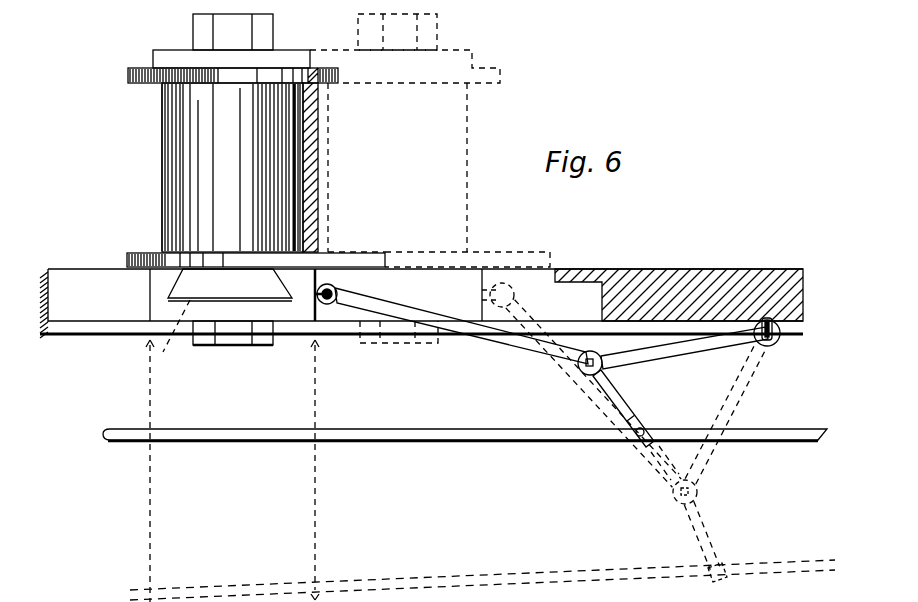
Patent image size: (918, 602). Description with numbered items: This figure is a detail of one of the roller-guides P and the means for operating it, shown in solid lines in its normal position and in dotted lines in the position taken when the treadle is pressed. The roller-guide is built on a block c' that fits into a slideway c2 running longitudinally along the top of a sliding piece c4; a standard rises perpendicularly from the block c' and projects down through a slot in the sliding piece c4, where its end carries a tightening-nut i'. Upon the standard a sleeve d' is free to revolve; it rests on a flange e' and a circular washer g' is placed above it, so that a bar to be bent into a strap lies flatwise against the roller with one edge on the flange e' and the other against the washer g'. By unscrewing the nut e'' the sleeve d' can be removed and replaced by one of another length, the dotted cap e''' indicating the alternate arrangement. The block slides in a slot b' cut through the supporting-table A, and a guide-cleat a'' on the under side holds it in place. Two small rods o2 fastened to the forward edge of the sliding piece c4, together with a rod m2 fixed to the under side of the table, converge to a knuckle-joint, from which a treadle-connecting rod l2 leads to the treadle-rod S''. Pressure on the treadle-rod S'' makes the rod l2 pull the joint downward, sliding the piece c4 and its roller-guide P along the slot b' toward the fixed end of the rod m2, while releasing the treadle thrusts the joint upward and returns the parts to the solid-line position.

The roller-guide P is at (192, 163).
The sleeve d' is at (314, 170).
The nut e'' is at (233, 32).
The cylinder head cap (alternate position) e''' is at (397, 32).
The circular washer g' is at (314, 67).
The flange e' is at (338, 251).
The table frame A is at (421, 297).
The slot b' is at (425, 294).
The guide-cleat a'' is at (421, 328).
The block c' is at (230, 283).
The sliding piece c4 is at (230, 310).
The slideway c2 is at (174, 332).
The tightening-nut i' is at (315, 333).
The rod o2 is at (498, 385).
The rod m2 is at (690, 401).
The treadle-connecting rod l2 is at (660, 476).
The treadle-rod S'' is at (469, 503).